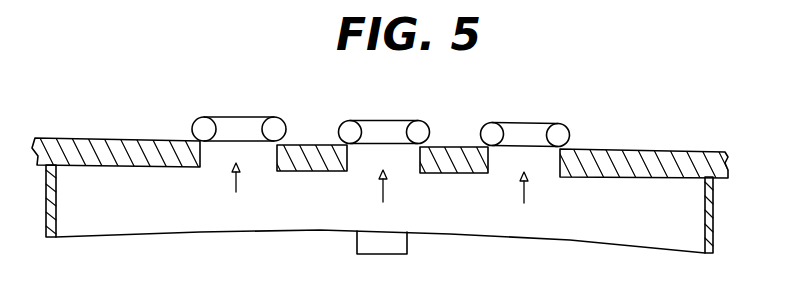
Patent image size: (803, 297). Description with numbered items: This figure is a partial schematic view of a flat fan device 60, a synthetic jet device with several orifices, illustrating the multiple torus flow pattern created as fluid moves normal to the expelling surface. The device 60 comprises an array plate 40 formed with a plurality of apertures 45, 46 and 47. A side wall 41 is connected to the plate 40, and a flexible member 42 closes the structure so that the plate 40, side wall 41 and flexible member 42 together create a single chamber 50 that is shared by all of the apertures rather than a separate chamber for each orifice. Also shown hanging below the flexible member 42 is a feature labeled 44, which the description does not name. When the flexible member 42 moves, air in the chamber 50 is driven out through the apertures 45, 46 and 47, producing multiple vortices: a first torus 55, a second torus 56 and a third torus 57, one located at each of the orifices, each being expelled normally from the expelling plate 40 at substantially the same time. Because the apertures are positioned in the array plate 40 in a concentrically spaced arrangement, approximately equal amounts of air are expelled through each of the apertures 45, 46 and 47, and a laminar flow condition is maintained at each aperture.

The array plate 40 is at (695, 148).
The side wall 41 is at (717, 202).
The flexible member 42 is at (527, 240).
The outlet duct 44 is at (390, 257).
The aperture 45 is at (553, 163).
The aperture 46 is at (408, 172).
The aperture 47 is at (202, 144).
The chamber 50 is at (667, 233).
The first torus 55 is at (277, 120).
The second torus 56 is at (422, 122).
The third torus 57 is at (558, 123).
The flat fan device 60 is at (547, 72).